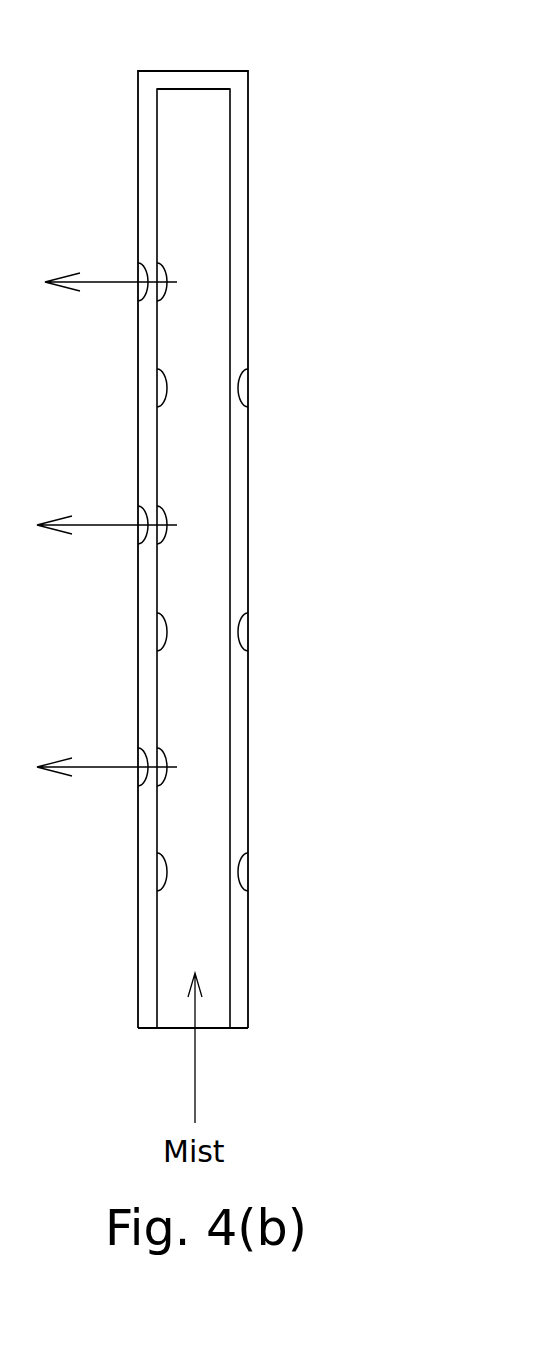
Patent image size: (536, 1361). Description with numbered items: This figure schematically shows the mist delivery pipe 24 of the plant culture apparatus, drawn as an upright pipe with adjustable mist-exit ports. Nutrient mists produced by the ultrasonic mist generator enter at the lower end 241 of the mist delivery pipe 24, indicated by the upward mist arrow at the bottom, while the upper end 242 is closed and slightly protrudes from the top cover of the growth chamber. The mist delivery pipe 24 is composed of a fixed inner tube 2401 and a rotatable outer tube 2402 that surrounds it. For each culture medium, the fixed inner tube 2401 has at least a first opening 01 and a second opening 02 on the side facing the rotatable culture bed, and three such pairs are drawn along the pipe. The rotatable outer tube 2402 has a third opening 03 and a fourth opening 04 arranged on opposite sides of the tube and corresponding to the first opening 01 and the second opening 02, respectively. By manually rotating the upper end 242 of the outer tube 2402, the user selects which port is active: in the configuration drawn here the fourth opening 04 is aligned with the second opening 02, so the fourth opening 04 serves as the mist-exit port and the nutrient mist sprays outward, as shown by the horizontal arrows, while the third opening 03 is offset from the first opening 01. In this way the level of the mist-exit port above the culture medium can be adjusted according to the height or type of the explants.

The mist delivery pipe 24 is at (370, 23).
The lower end 241 is at (218, 1028).
The upper end 242 is at (178, 82).
The fixed inner tube 2401 is at (230, 297).
The rotatable outer tube 2402 is at (248, 198).
The first opening 01 is at (185, 630).
The second opening 02 is at (185, 509).
The third opening 03 is at (268, 630).
The fourth opening 04 is at (107, 509).